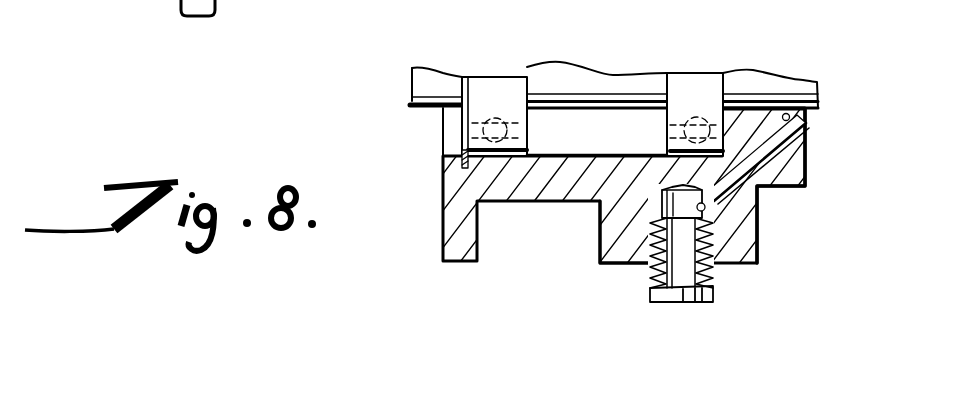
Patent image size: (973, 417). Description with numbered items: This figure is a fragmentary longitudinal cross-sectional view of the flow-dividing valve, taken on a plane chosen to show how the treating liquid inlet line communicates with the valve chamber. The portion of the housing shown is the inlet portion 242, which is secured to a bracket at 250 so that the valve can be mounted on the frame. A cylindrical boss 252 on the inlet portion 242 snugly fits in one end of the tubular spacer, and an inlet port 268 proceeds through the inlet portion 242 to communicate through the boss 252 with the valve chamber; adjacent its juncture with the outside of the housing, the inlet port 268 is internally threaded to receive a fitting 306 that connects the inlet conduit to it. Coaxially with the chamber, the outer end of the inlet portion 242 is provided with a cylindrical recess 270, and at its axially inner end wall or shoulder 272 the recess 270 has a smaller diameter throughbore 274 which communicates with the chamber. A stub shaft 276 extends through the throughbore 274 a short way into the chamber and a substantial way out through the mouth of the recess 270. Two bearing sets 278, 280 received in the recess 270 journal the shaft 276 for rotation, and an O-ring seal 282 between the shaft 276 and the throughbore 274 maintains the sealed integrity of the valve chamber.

The inlet portion 242 is at (622, 253).
The bracket securing location 250 is at (525, 204).
The cylindrical boss 252 is at (804, 178).
The inlet port 268 is at (740, 212).
The cylindrical recess 270 is at (612, 159).
The shoulder 272 is at (695, 113).
The throughbore 274 is at (765, 108).
The stub shaft 276 is at (426, 78).
The bearing set 278 is at (498, 84).
The bearing set 280 is at (697, 73).
The O-ring seal 282 is at (812, 122).
The fitting 306 is at (703, 262).